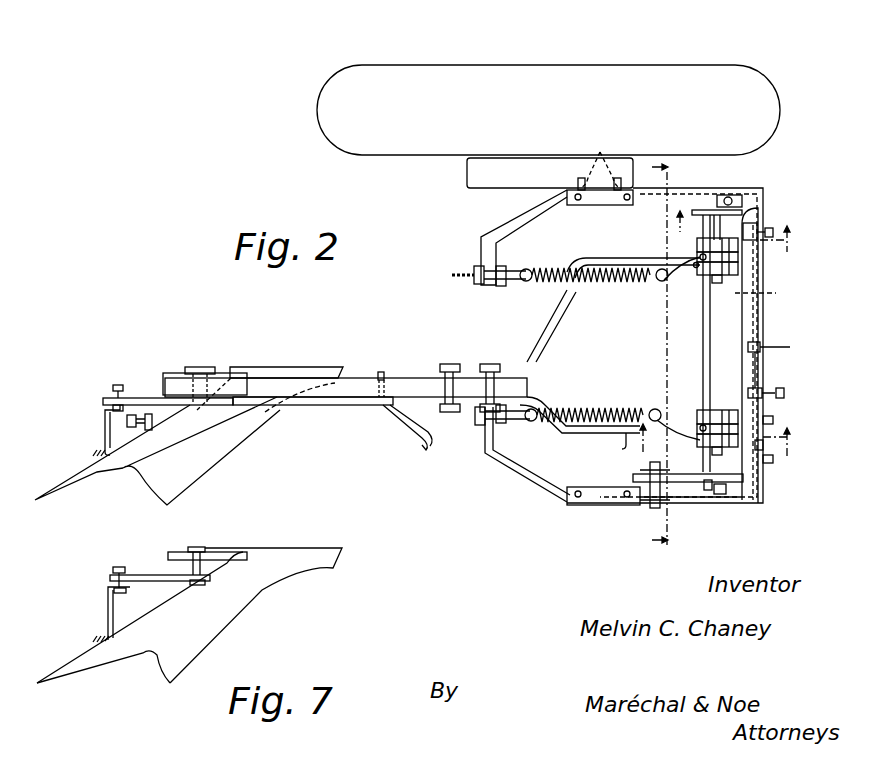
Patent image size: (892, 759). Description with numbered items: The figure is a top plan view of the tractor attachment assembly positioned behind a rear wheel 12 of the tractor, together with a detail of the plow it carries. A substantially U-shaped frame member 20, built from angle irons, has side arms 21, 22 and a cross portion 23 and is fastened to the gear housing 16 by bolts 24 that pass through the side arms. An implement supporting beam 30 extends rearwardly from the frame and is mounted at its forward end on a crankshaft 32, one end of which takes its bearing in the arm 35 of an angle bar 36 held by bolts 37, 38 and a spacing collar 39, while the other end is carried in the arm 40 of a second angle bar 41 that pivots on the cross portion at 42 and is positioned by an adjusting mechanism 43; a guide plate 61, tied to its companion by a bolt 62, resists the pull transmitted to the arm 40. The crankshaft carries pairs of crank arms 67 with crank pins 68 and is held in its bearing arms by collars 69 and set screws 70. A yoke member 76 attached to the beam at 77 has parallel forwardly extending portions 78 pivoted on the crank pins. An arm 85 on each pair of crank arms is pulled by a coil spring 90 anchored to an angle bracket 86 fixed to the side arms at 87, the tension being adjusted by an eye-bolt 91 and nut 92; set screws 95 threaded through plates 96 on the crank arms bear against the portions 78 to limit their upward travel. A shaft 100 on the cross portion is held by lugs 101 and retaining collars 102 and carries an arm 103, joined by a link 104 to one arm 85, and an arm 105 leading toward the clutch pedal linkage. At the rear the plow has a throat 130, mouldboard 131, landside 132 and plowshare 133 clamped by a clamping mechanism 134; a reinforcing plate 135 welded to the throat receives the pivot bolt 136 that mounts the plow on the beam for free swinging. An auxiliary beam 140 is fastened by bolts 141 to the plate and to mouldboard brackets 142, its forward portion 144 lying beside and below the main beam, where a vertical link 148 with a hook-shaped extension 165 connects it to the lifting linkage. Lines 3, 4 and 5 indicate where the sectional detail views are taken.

In FIG. 2, the tank 12 is at (575, 66).
In FIG. 2, the gear housing 16 is at (467, 172).
In FIG. 2, the bolts 24 is at (599, 164).
In FIG. 2, the attachment point of angle brackets 87 is at (580, 206).
In FIG. 2, the side arm 22 is at (686, 190).
In FIG. 2, the angle brackets 86 is at (545, 218).
In FIG. 2, the nuts 92 is at (478, 285).
In FIG. 2, the eye-bolts 91 is at (505, 287).
In FIG. 2, the coil spring 90 is at (590, 283).
In FIG. 2, the plates 96 is at (655, 282).
In FIG. 2, the set screws 95 is at (690, 270).
In FIG. 2, the forwardly extending portions 78 is at (608, 256).
In FIG. 2, the yoke member 76 is at (552, 322).
In FIG. 2, the attachment point of yoke members 77 is at (490, 358).
In FIG. 2, the implement supporting beam 30 is at (402, 378).
In FIG. 2, the frog or throat 130 is at (205, 372).
In FIG. 7, the frog or throat 130 is at (220, 552).
In FIG. 2, the bolt 136 is at (197, 367).
In FIG. 7, the bolt 136 is at (195, 547).
In FIG. 2, the landside 132 is at (232, 366).
In FIG. 2, the reinforcing plate 135 is at (148, 398).
In FIG. 7, the reinforcing plate 135 is at (143, 575).
In FIG. 2, the bolts 141 is at (118, 385).
In FIG. 7, the bolts 141 is at (119, 567).
In FIG. 2, the brackets 142 is at (104, 419).
In FIG. 7, the brackets 142 is at (108, 606).
In FIG. 2, the clamping mechanism 134 is at (108, 437).
In FIG. 2, the mouldboard 131 is at (125, 470).
In FIG. 7, the mouldboard 131 is at (130, 650).
In FIG. 2, the plowshare 133 is at (210, 458).
In FIG. 7, the plowshare 133 is at (223, 617).
In FIG. 2, the auxiliary beam 140 is at (285, 410).
In FIG. 2, the forwardly extending portion 144 is at (360, 406).
In FIG. 2, the link 148 is at (405, 438).
In FIG. 2, the hook-shaped extension 165 is at (380, 370).
In FIG. 2, the section line 3- 3 is at (654, 354).
In FIG. 2, the section line 4- 4 is at (717, 447).
In FIG. 2, the section line 5- 5 is at (733, 238).
In FIG. 2, the crankshaft 32 is at (703, 334).
In FIG. 2, the set screws 70 is at (700, 210).
In FIG. 2, the collars 69 is at (724, 193).
In FIG. 2, the adjusting mechanism 43 is at (740, 196).
In FIG. 2, the cross portion 23 is at (762, 305).
In FIG. 2, the guide plate 61 is at (758, 228).
In FIG. 2, the bolt 62 is at (773, 232).
In FIG. 2, the arm 40 is at (734, 210).
In FIG. 2, the crank arms 67 is at (697, 243).
In FIG. 2, the crank pins 68 is at (732, 276).
In FIG. 2, the arm 85 is at (698, 282).
In FIG. 2, the lugs 101 is at (748, 347).
In FIG. 2, the retaining collars 102 is at (745, 345).
In FIG. 2, the arm 103 is at (750, 378).
In FIG. 2, the link 104 is at (703, 335).
In FIG. 2, the shaft 100 is at (762, 368).
In FIG. 2, the arm 105 is at (776, 345).
In FIG. 2, the pivot mounting 42 is at (770, 393).
In FIG. 2, the bolt 37 is at (768, 420).
In FIG. 2, the angle bar 36 is at (770, 450).
In FIG. 2, the second angle bar 41 is at (766, 295).
In FIG. 2, the arm 35 is at (676, 476).
In FIG. 2, the bolt 38 is at (655, 462).
In FIG. 2, the spacing collar 39 is at (648, 488).
In FIG. 2, the frame member 20 is at (600, 505).
In FIG. 2, the side arm 21 is at (735, 506).